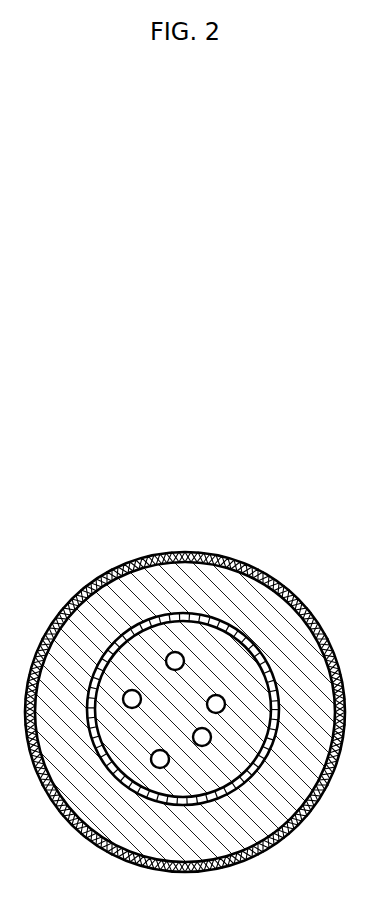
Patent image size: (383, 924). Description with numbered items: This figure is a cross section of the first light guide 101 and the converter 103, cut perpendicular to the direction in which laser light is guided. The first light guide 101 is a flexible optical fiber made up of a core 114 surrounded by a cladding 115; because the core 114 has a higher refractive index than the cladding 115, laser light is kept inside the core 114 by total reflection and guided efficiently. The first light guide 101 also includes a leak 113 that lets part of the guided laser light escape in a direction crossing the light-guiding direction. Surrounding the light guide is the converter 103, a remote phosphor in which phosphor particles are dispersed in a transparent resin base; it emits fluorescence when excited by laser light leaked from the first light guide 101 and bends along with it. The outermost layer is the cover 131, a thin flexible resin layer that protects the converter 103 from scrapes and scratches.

The first light guide 101 is at (240, 498).
The converter 103 is at (250, 597).
The leak 113 is at (162, 768).
The core 114 is at (157, 642).
The cladding 115 is at (200, 612).
The cover 131 is at (298, 596).